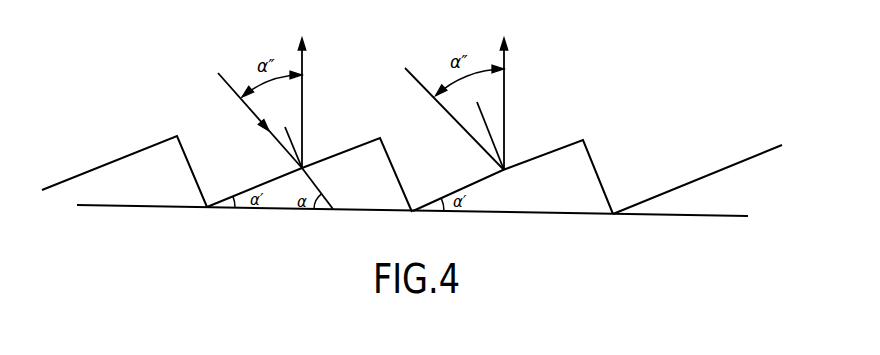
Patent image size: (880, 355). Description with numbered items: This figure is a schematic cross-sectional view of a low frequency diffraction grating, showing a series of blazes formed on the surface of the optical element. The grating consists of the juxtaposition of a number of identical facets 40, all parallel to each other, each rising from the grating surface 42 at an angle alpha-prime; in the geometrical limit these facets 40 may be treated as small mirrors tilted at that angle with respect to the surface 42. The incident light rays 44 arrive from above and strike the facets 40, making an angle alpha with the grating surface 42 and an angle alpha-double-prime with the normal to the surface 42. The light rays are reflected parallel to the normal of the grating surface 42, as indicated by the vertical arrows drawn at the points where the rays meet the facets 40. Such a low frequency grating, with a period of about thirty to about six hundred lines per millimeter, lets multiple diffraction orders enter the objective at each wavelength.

The facets 40 is at (145, 147).
The grating surface 42 is at (733, 215).
The incident light rays 44 is at (227, 87).